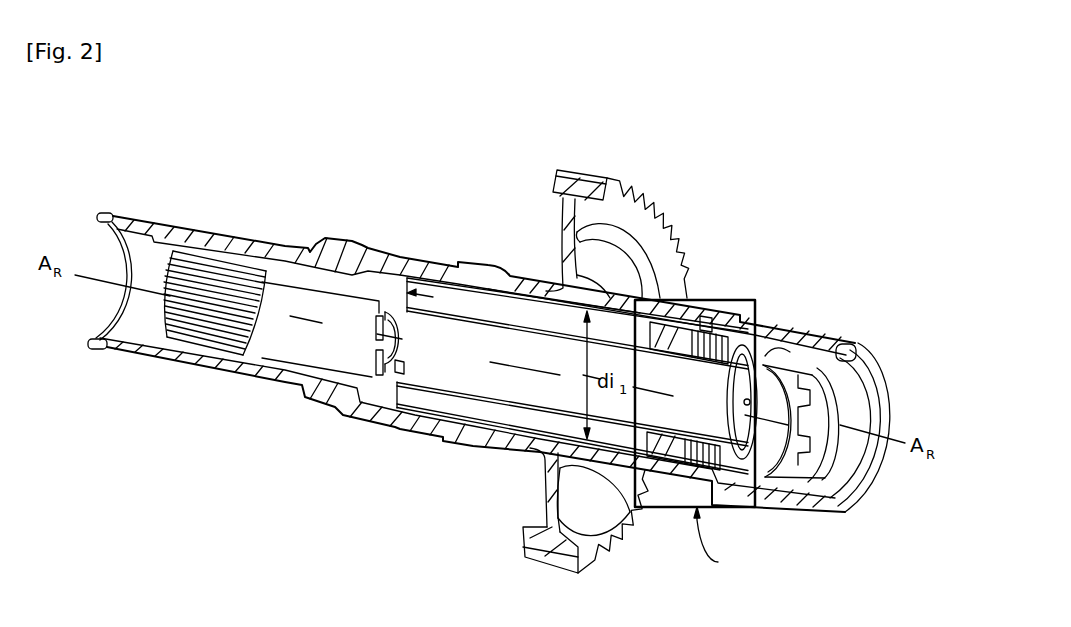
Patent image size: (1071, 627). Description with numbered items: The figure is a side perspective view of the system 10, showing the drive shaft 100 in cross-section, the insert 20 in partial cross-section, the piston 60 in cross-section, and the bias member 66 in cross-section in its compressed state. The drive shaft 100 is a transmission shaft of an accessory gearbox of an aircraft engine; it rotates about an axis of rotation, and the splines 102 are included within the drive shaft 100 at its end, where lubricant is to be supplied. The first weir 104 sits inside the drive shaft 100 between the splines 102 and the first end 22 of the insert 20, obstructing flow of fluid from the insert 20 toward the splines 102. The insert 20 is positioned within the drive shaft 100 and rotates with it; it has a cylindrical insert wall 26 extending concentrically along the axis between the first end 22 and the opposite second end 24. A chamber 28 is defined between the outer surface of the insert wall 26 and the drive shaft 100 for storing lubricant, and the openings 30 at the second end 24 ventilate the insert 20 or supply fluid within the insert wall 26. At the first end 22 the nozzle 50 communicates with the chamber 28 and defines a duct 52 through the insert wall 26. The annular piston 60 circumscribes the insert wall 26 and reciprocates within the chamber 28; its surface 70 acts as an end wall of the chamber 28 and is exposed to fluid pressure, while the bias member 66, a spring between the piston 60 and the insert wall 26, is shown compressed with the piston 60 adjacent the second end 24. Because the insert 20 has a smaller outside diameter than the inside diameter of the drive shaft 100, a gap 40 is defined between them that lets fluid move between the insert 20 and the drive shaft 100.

The system 10 is at (864, 189).
The insert 20 is at (486, 340).
The first end 22 is at (452, 290).
The second end 24 is at (731, 340).
The insert wall 26 is at (517, 412).
The chamber 28 is at (520, 316).
The openings 30 is at (808, 342).
The gap 40 is at (473, 408).
The nozzle 50 is at (378, 370).
The duct 52 is at (406, 364).
The piston 60 is at (663, 318).
The bias member 66 is at (697, 322).
The surface 70 is at (646, 353).
The drive shaft 100 is at (731, 246).
The splines 102 is at (221, 236).
The first weir 104 is at (378, 326).